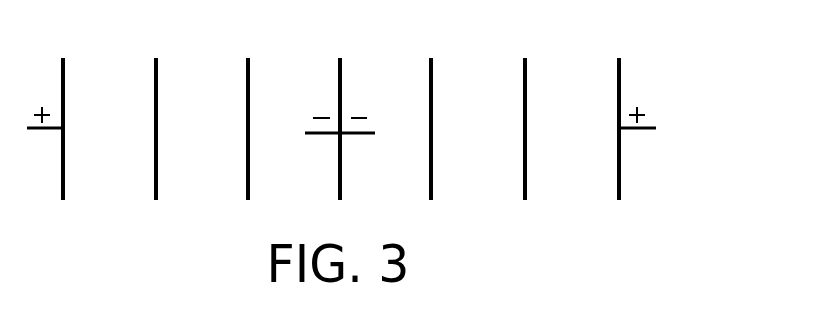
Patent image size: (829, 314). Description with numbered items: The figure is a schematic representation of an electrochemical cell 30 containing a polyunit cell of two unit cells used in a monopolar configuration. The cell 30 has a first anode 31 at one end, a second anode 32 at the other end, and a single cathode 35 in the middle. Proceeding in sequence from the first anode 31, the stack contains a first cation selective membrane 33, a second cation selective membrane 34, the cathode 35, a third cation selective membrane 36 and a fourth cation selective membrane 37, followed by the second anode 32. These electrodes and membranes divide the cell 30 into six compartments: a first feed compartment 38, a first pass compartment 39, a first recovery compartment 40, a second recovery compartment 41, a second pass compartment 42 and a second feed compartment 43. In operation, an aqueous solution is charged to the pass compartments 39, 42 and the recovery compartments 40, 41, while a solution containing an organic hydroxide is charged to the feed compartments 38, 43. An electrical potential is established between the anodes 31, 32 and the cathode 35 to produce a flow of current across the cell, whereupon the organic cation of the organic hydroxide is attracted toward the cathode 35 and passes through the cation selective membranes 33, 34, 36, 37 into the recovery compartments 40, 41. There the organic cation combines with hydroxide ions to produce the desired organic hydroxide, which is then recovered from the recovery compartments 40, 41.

The electrochemical cell 30 is at (398, 131).
The first anode 31 is at (50, 114).
The second anode 32 is at (628, 114).
The first cation selective membrane 33 is at (155, 131).
The second cation selective membrane 34 is at (247, 131).
The cathode 35 is at (340, 114).
The third cation selective membrane 36 is at (429, 131).
The fourth cation selective membrane 37 is at (522, 131).
The first feed compartment 38 is at (108, 189).
The first pass compartment 39 is at (203, 189).
The first recovery compartment 40 is at (292, 189).
The second recovery compartment 41 is at (380, 189).
The second pass compartment 42 is at (474, 189).
The second feed compartment 43 is at (572, 189).